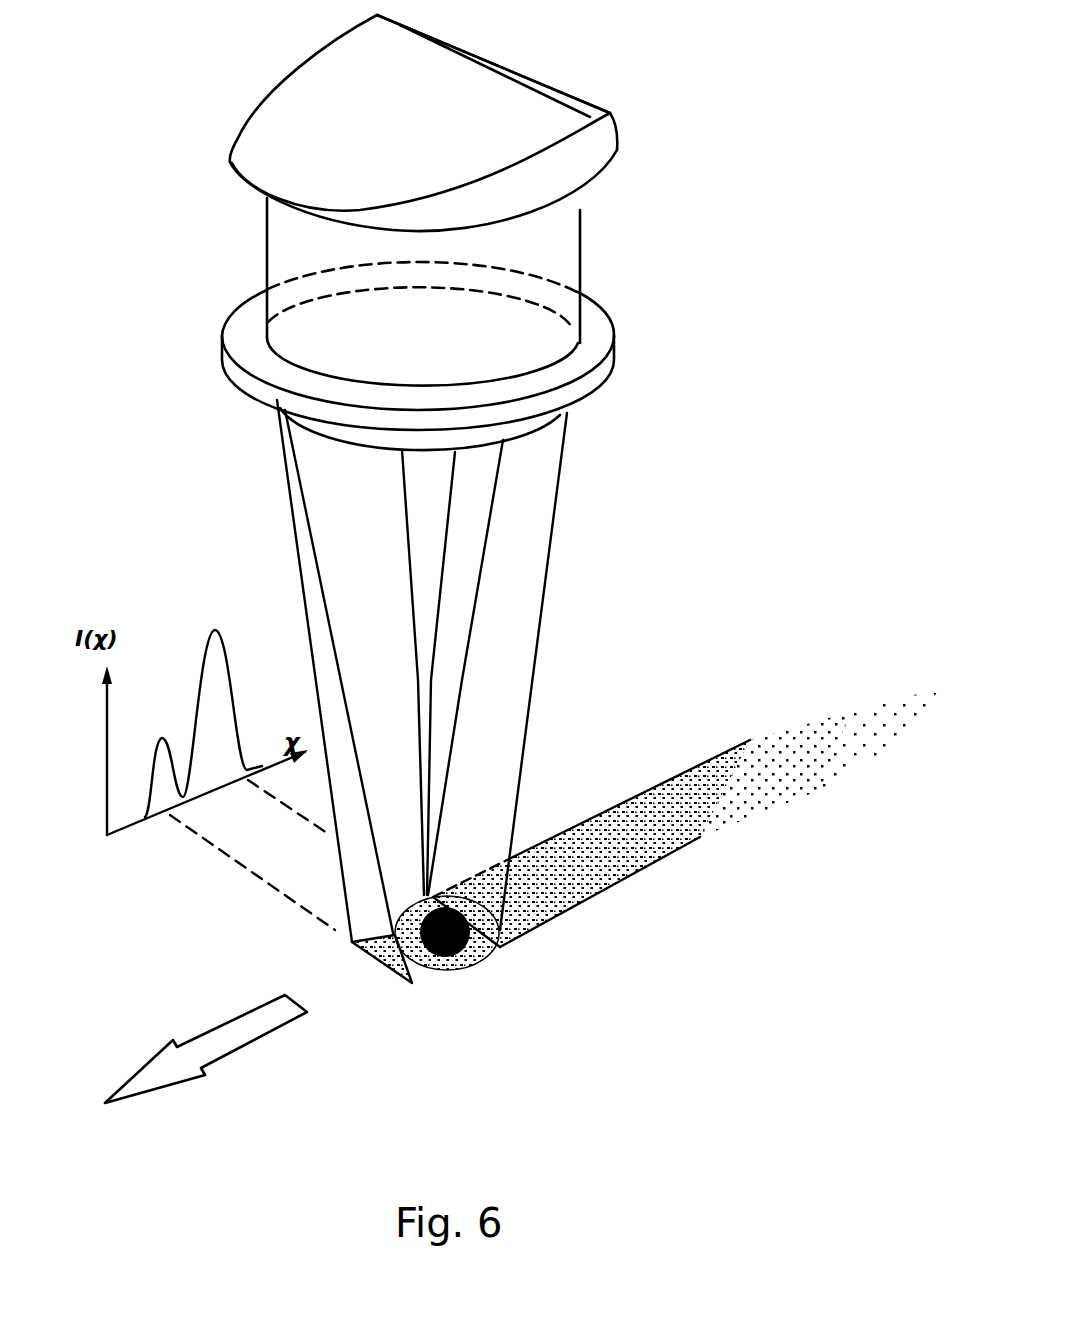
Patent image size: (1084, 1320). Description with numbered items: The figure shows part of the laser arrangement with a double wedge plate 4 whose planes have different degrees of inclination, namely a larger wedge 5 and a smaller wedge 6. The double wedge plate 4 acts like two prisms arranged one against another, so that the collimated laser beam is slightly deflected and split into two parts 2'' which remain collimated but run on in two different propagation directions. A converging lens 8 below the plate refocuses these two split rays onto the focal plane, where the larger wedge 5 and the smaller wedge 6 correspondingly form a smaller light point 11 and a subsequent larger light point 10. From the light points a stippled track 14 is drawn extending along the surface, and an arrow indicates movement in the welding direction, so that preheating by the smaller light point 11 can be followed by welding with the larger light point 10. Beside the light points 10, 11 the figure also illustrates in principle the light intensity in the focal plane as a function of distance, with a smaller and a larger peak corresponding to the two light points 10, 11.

The split radiation parts 2'' is at (492, 292).
The double wedge plate 4 is at (607, 147).
The larger wedge 5 is at (303, 73).
The smaller wedge 6 is at (565, 85).
The converging lens 8 is at (593, 355).
The larger light point 10 is at (460, 970).
The smaller light point 11 is at (405, 973).
The light beam 14 is at (607, 880).